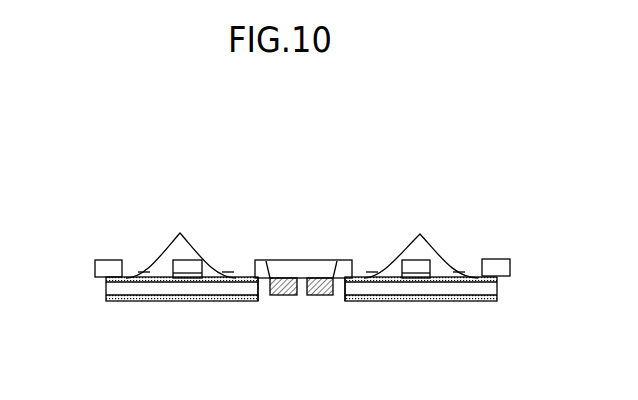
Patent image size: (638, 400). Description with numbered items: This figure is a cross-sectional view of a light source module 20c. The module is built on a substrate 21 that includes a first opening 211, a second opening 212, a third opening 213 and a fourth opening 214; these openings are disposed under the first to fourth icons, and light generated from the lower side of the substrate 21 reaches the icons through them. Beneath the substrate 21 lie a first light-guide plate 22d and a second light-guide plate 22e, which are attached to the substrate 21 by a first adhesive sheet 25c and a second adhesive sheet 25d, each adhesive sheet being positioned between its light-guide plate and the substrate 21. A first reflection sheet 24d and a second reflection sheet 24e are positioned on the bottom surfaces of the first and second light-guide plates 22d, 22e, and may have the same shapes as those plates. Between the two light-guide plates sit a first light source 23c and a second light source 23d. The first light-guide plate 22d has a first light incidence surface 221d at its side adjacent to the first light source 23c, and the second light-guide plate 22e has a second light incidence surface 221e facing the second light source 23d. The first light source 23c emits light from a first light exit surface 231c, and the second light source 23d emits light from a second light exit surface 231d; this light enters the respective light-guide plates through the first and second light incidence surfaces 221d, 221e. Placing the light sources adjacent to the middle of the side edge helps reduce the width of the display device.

The light source module 20c is at (405, 120).
The substrate 21 is at (96, 268).
The first opening 211 is at (143, 271).
The second opening 212 is at (228, 271).
The third opening 213 is at (371, 271).
The fourth opening 214 is at (459, 271).
The first adhesive sheet 25c is at (186, 276).
The second adhesive sheet 25d is at (417, 276).
The first light exit surface 231c is at (273, 262).
The second light exit surface 231d is at (335, 262).
The first light-guide plate 22d is at (184, 289).
The second light-guide plate 22e is at (428, 289).
The first reflection sheet 24d is at (143, 297).
The second reflection sheet 24e is at (472, 297).
The first light incidence surface 221d is at (268, 297).
The second light incidence surface 221e is at (335, 297).
The first light source 23c is at (284, 296).
The second light source 23d is at (318, 296).